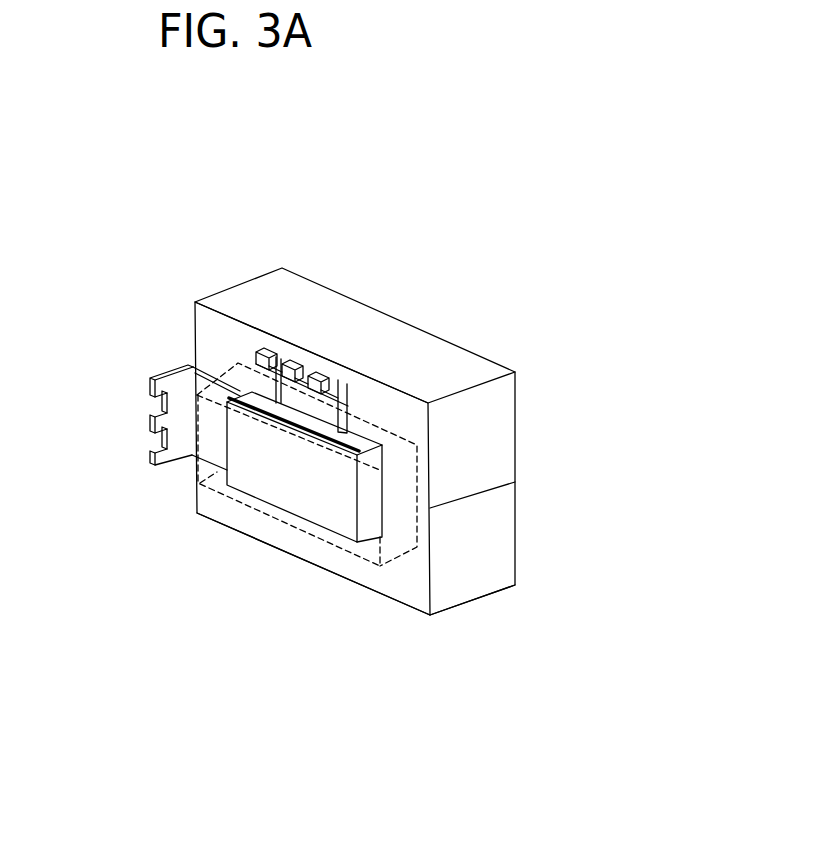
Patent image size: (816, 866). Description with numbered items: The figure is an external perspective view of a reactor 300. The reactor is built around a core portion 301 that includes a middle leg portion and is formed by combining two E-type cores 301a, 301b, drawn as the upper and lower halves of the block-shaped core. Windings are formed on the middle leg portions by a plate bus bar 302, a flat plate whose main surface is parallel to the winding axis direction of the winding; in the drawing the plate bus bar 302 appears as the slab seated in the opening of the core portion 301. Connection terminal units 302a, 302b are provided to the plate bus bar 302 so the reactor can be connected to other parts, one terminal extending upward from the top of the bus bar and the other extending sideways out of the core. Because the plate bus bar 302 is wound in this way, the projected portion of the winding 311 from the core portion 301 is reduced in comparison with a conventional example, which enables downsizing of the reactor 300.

The reactor 300 is at (158, 257).
The core portion 301 is at (652, 545).
The E-type core 301a is at (485, 468).
The E-type core 301b is at (477, 563).
The plate bus bar 302 is at (287, 483).
The connection terminal unit 302a is at (302, 357).
The connection terminal unit 302b is at (158, 420).
The winding 311 is at (378, 567).